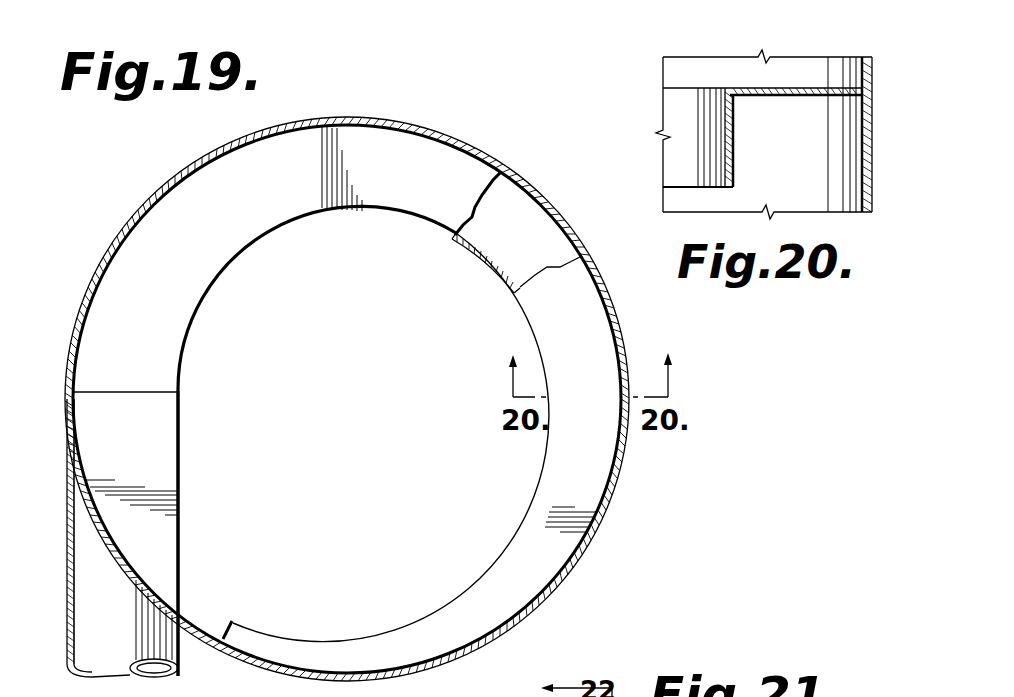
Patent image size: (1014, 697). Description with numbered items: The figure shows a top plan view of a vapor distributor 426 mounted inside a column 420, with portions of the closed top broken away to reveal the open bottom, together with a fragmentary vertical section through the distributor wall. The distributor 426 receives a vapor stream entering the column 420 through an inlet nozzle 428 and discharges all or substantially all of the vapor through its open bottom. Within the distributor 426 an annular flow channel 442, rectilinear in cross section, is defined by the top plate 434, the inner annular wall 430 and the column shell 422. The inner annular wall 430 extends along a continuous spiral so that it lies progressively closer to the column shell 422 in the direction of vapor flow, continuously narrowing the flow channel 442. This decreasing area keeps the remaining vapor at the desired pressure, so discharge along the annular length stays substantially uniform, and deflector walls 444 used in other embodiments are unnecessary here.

In FIG. 19, the column 420 is at (398, 106).
In FIG. 19, the column shell 422 is at (142, 201).
In FIG. 20, the column shell 422 is at (870, 56).
In FIG. 19, the distributor 426 is at (188, 441).
In FIG. 19, the inlet nozzle 428 is at (67, 653).
In FIG. 19, the inner annular wall 430 is at (497, 271).
In FIG. 20, the inner annular wall 430 is at (734, 148).
In FIG. 19, the top plate 434 is at (484, 167).
In FIG. 20, the top plate 434 is at (807, 88).
In FIG. 19, the flow channel 442 is at (526, 240).
In FIG. 20, the flow channel 442 is at (815, 171).
In FIG. 19, the deflector walls 444 is at (229, 620).